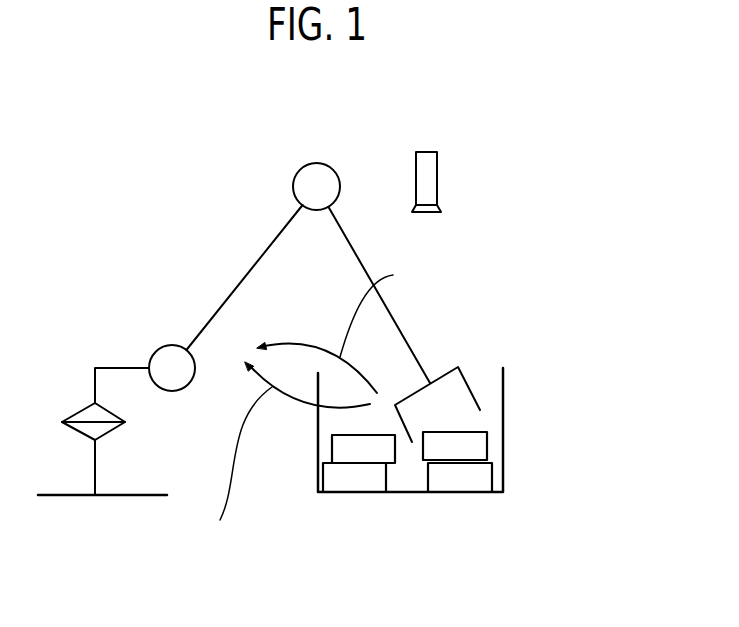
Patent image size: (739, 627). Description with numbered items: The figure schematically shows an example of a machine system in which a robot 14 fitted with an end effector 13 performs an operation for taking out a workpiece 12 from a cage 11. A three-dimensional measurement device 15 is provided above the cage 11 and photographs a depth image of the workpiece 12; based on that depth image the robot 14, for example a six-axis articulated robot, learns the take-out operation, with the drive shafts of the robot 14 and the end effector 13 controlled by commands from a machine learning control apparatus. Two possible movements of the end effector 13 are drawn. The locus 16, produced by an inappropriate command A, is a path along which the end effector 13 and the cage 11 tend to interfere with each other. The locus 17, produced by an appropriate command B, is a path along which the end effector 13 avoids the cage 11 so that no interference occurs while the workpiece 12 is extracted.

The cage 11 is at (505, 393).
The workpiece 12 is at (460, 477).
The end effector 13 is at (467, 378).
The robot 14 is at (250, 266).
The three-dimensional measurement device 15 is at (428, 150).
The locus 16 is at (302, 412).
The locus 17 is at (282, 338).